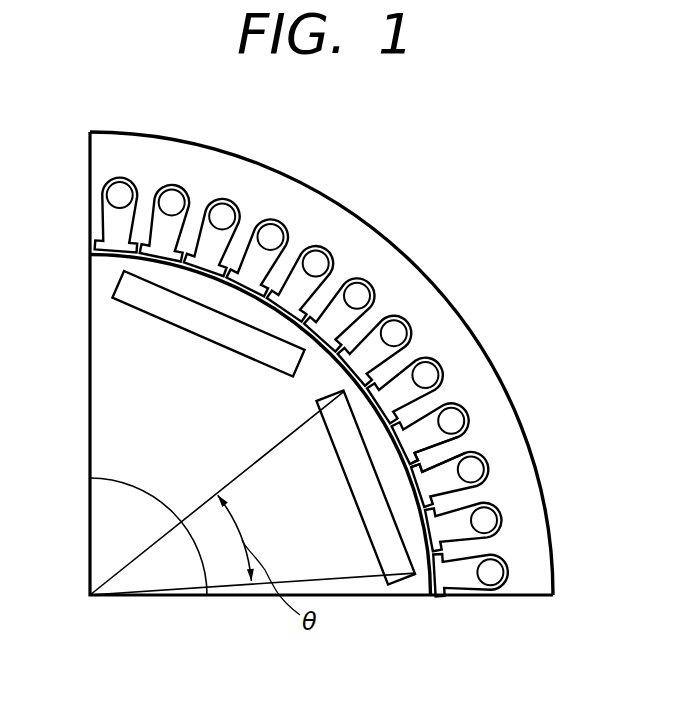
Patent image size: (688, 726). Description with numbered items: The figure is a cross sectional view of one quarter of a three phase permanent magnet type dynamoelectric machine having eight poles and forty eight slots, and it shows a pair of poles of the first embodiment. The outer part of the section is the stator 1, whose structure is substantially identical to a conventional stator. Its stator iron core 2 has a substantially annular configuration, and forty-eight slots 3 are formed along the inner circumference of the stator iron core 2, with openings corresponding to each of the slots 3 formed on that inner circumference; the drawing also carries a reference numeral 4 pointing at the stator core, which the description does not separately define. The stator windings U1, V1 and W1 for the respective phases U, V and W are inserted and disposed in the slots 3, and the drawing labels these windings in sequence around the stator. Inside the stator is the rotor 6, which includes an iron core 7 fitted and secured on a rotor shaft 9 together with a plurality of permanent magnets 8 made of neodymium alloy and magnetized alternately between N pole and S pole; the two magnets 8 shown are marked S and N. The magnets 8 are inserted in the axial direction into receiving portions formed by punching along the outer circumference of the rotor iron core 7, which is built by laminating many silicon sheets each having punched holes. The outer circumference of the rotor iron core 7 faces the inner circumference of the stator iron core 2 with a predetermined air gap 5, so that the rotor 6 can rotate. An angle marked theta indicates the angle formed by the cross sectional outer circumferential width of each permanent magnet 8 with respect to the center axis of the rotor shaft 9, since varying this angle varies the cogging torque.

The stator 1 is at (554, 572).
The stator iron core 2 is at (478, 594).
The slots 3 is at (457, 582).
The stator core yoke 4 is at (489, 492).
The air gap 5 is at (439, 396).
The rotor 6 is at (92, 267).
The rotor iron core 7 is at (107, 352).
The permanent magnets 8 is at (257, 350).
The rotor shaft 9 is at (128, 528).
The stator winding for phase V V1 is at (172, 200).
The stator winding for phase W W1 is at (271, 235).
The stator winding for phase U U1 is at (318, 262).